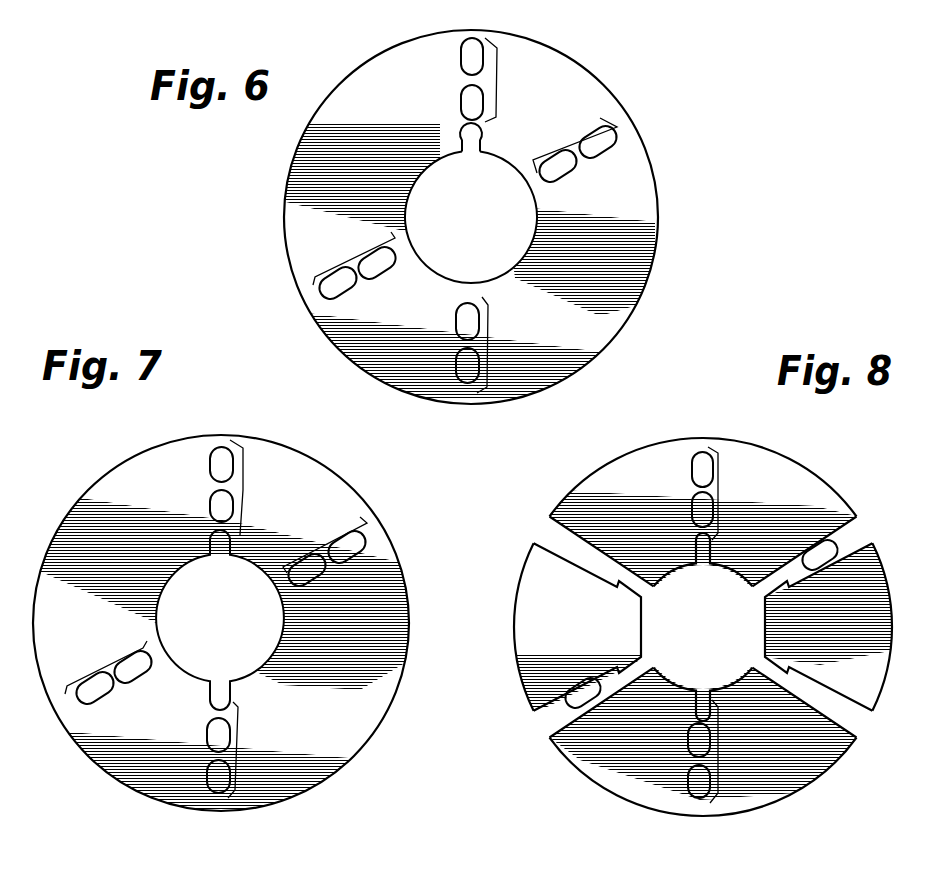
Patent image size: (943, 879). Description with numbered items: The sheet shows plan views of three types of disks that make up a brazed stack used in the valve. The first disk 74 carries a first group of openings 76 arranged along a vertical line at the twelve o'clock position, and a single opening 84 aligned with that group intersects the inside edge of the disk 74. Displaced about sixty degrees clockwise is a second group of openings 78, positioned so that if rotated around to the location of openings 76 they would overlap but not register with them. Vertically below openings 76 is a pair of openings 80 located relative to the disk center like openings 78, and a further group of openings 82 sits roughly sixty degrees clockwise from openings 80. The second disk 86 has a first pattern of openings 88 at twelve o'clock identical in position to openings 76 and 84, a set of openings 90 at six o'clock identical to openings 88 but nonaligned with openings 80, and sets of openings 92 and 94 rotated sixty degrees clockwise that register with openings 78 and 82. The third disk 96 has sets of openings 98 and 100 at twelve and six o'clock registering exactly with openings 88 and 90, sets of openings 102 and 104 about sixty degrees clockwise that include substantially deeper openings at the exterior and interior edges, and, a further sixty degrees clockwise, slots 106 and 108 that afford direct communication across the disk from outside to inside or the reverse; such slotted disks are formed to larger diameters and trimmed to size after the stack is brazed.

In FIG. 6, the disk 74 is at (655, 152).
In FIG. 6, the first group of openings 76 is at (497, 80).
In FIG. 6, the second group of openings 78 is at (566, 140).
In FIG. 6, the pair of openings 80 is at (488, 347).
In FIG. 6, the group of openings 82 is at (349, 254).
In FIG. 6, the single opening 84 is at (481, 148).
In FIG. 7, the second disk 86 is at (350, 488).
In FIG. 7, the first pattern of openings 88 is at (243, 485).
In FIG. 7, the set of openings 90 is at (238, 760).
In FIG. 7, the set of openings 92 is at (320, 537).
In FIG. 7, the set of openings 94 is at (101, 660).
In FIG. 8, the third disk 96 is at (853, 514).
In FIG. 8, the set of openings 98 is at (718, 490).
In FIG. 8, the set of openings 100 is at (718, 745).
In FIG. 8, the set of openings 102 is at (806, 521).
In FIG. 8, the set of openings 104 is at (577, 633).
In FIG. 8, the slot 106 is at (843, 724).
In FIG. 8, the slot 108 is at (540, 538).